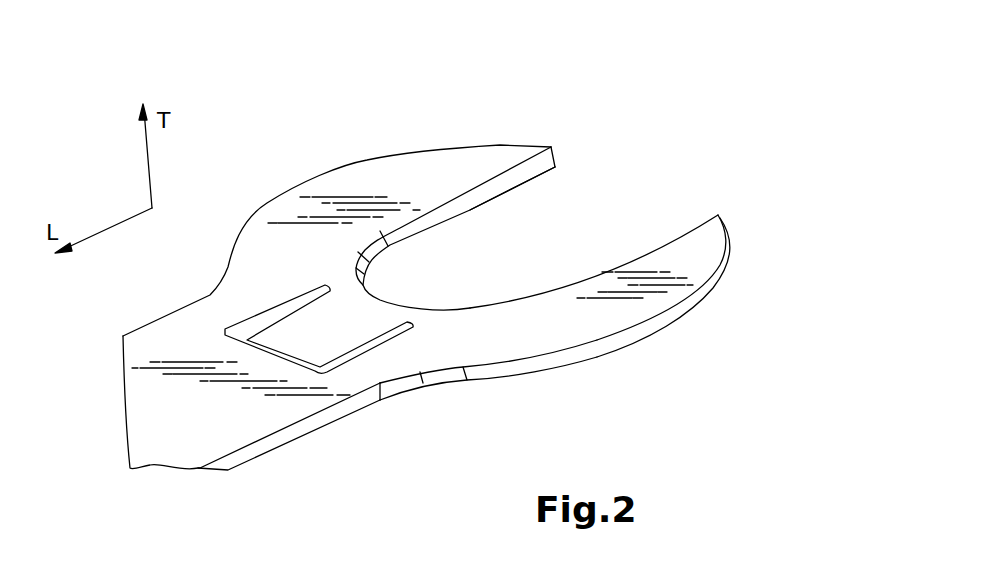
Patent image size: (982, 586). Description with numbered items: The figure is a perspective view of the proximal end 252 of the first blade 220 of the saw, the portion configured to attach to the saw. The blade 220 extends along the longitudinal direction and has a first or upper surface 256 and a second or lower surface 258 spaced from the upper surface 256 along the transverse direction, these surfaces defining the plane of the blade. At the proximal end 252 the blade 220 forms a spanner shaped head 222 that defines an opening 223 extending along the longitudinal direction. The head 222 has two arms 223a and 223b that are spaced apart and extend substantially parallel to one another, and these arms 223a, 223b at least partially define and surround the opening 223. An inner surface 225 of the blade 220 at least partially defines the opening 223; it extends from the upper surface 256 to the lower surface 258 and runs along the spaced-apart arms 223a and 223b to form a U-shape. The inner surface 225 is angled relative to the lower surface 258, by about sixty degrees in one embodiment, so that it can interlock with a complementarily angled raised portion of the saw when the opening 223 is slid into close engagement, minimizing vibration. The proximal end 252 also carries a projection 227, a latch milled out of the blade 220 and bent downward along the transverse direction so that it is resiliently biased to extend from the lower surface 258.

The proximal end 252 is at (342, 123).
The first blade 220 is at (309, 426).
The spanner shaped head 222 is at (643, 340).
The opening 223 is at (682, 183).
The arm 223a is at (522, 148).
The arm 223b is at (720, 282).
The inner surface 225 is at (537, 166).
The projection 227 is at (297, 335).
The upper surface 256 is at (492, 337).
The lower surface 258 is at (497, 380).